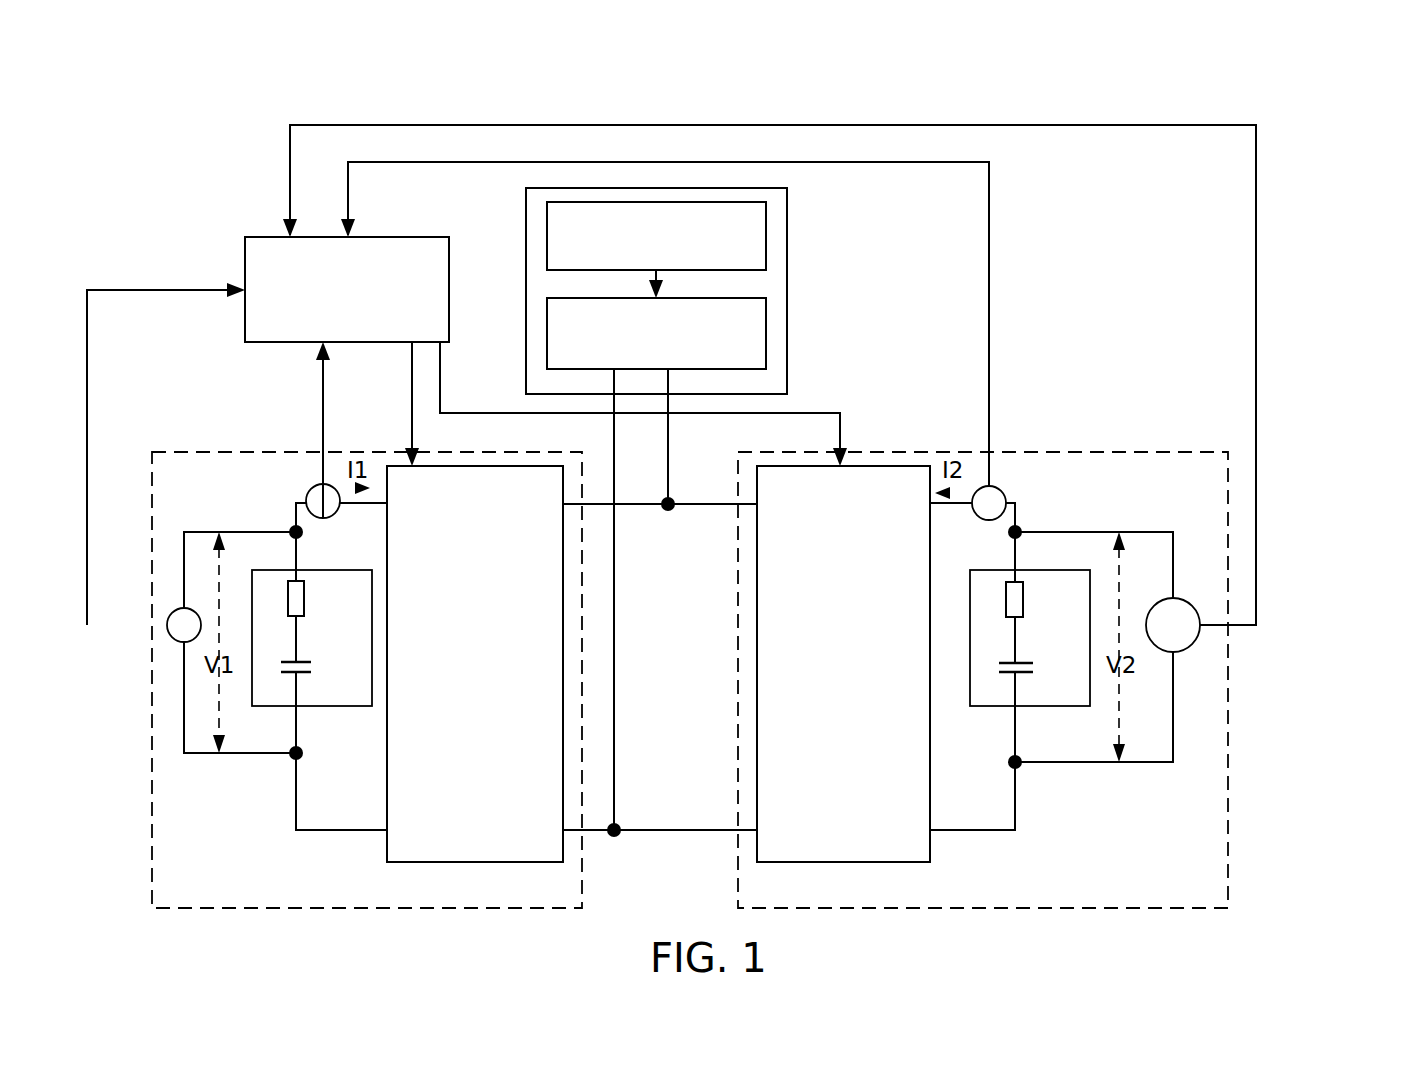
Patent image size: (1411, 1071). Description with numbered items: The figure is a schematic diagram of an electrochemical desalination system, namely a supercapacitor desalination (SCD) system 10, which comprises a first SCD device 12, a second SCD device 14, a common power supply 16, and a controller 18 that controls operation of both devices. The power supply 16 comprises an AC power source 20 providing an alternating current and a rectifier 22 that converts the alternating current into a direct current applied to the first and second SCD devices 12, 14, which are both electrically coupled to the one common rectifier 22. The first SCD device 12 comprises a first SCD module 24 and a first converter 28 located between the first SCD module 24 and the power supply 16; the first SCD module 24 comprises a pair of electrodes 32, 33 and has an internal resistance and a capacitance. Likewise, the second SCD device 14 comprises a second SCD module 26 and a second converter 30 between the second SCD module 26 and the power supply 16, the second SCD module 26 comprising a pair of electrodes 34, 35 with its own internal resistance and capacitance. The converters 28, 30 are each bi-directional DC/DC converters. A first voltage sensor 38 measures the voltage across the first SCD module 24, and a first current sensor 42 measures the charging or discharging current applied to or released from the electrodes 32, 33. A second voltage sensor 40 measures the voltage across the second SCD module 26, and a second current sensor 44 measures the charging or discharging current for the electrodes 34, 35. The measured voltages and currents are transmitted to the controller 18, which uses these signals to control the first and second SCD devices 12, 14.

The supercapacitor desalination system 10 is at (1305, 102).
The first SCD device 12 is at (152, 800).
The second SCD device 14 is at (1228, 800).
The power supply 16 is at (787, 270).
The controller 18 is at (257, 237).
The AC power source 20 is at (547, 237).
The rectifier 22 is at (558, 298).
The first SCD module 24 is at (313, 639).
The second SCD module 26 is at (1017, 668).
The first converter 28 is at (387, 848).
The second converter 30 is at (930, 845).
The electrode 32 is at (300, 660).
The electrode 33 is at (301, 674).
The electrode 34 is at (1018, 661).
The electrode 35 is at (1020, 675).
The first voltage sensor 38 is at (172, 640).
The second voltage sensor 40 is at (1188, 646).
The first current sensor 42 is at (311, 490).
The second current sensor 44 is at (1003, 492).